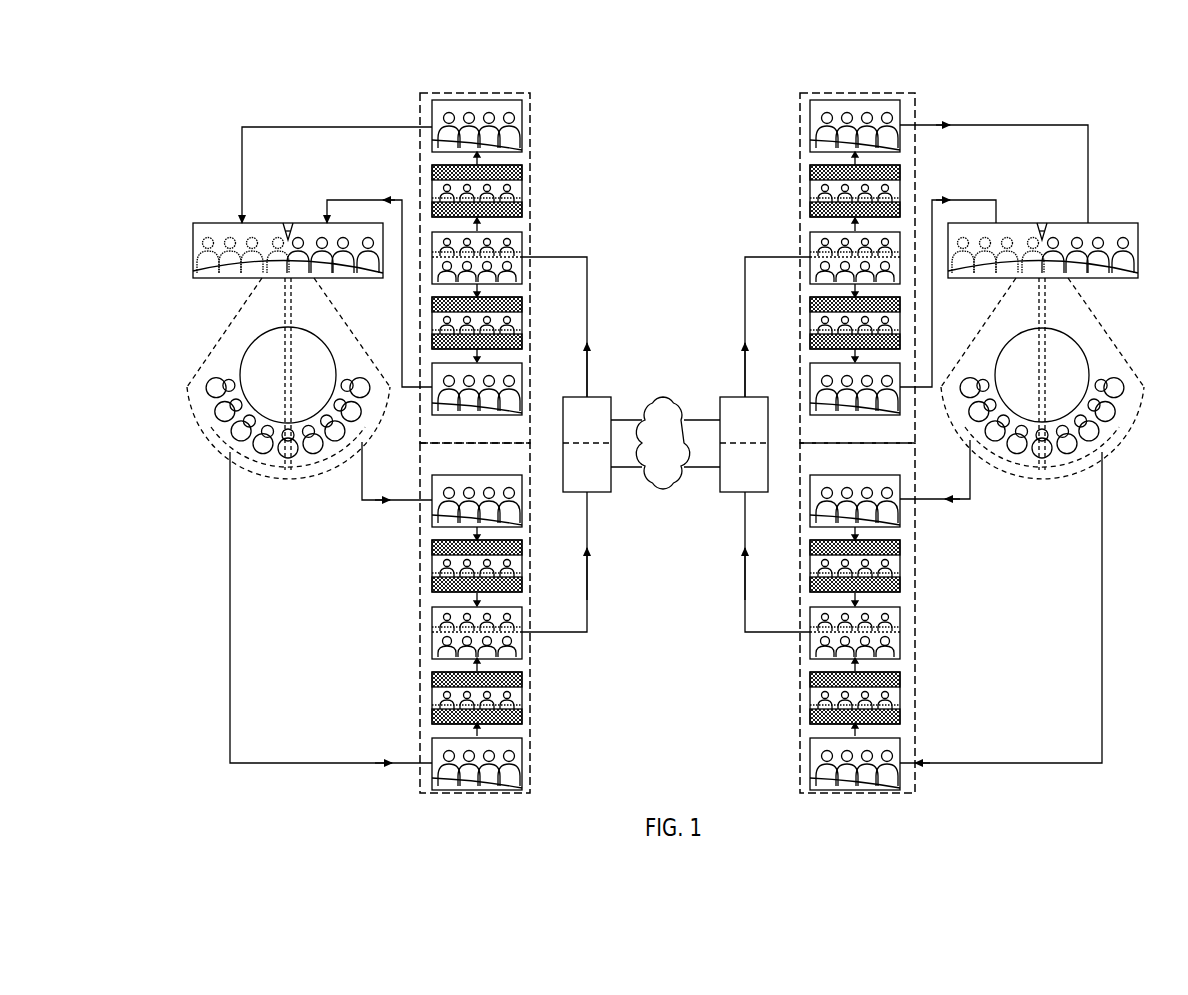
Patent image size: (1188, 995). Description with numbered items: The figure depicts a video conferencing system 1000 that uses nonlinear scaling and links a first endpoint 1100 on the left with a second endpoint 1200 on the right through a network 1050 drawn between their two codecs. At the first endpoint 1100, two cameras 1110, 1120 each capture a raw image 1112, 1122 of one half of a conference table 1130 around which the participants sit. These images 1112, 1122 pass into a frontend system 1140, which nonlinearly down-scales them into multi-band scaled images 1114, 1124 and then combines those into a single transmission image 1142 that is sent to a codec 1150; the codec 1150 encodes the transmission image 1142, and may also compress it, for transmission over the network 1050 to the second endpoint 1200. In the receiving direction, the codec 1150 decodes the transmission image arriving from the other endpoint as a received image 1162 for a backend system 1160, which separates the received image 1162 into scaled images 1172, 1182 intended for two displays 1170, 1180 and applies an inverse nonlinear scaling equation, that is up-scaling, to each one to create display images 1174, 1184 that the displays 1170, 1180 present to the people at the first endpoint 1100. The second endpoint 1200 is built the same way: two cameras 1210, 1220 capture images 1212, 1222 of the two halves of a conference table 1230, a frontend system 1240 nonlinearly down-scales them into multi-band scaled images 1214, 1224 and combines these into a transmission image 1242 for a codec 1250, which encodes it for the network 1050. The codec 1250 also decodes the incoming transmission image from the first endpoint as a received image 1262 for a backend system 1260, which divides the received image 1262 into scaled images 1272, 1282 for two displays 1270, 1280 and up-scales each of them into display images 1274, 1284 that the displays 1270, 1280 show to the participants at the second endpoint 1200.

The video conferencing system 1000 is at (659, 95).
The first endpoint 1100 is at (212, 96).
The second endpoint 1200 is at (1100, 95).
The camera 1110 is at (288, 238).
The camera 1120 is at (289, 238).
The display 1170 is at (183, 216).
The conference table 1130 is at (245, 342).
The backend system 1160 is at (470, 93).
The frontend system 1140 is at (530, 768).
The display 1180 is at (328, 208).
The display image 1174 is at (522, 130).
The scaled image 1172 is at (522, 195).
The received image 1162 is at (522, 256).
The scaled image 1182 is at (522, 316).
The display image 1184 is at (522, 391).
The image 1122 is at (432, 512).
The multi-band scaled image 1124 is at (432, 572).
The transmission image 1142 is at (432, 635).
The multi-band scaled image 1114 is at (522, 708).
The image 1112 is at (432, 778).
The codec 1150 is at (598, 492).
The codec 1250 is at (737, 492).
The network 1050 is at (665, 397).
The camera 1210 is at (1042, 238).
The camera 1220 is at (1042, 238).
The display 1280 is at (1142, 215).
The conference table 1230 is at (1082, 342).
The backend system 1260 is at (825, 93).
The frontend system 1240 is at (800, 766).
The display 1270 is at (962, 188).
The display image 1274 is at (810, 108).
The scaled image 1272 is at (810, 180).
The received image 1262 is at (810, 240).
The scaled image 1282 is at (810, 316).
The display image 1284 is at (810, 391).
The image 1222 is at (900, 512).
The multi-band scaled image 1224 is at (900, 570).
The transmission image 1242 is at (900, 633).
The multi-band scaled image 1214 is at (810, 708).
The image 1212 is at (900, 776).